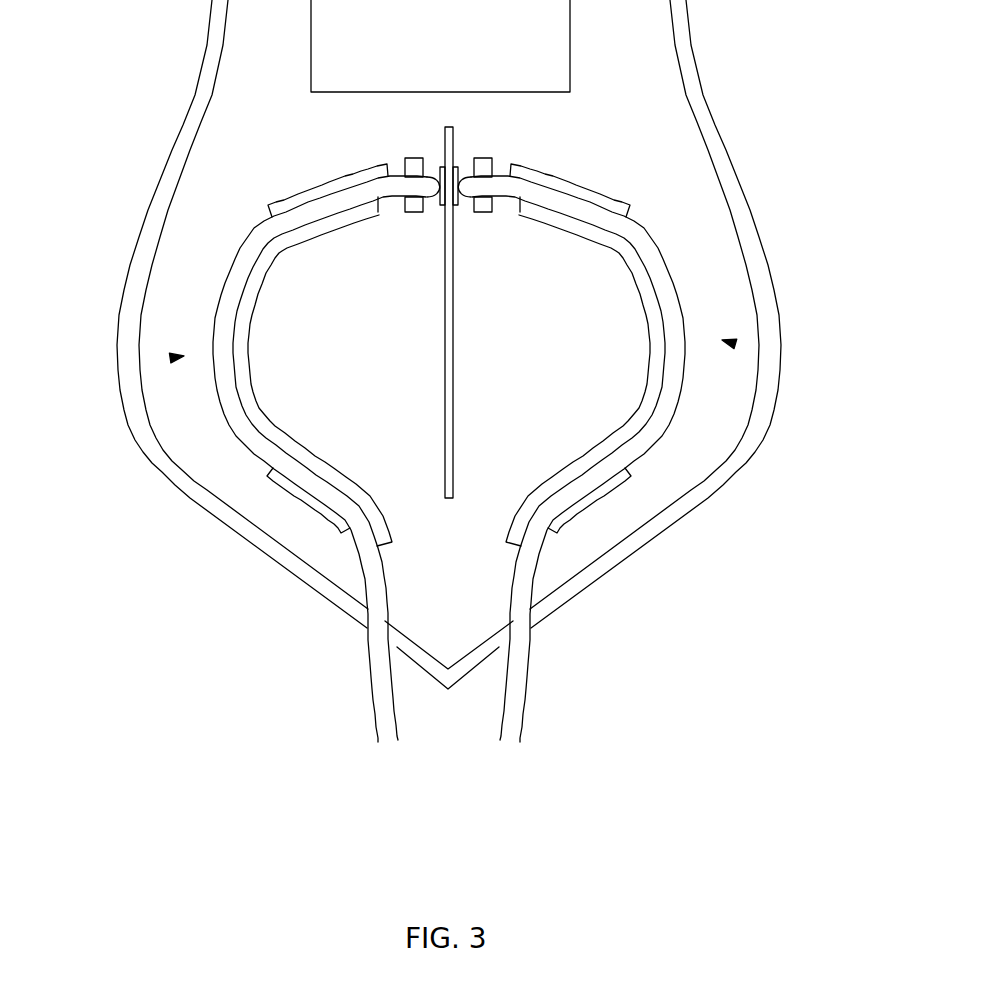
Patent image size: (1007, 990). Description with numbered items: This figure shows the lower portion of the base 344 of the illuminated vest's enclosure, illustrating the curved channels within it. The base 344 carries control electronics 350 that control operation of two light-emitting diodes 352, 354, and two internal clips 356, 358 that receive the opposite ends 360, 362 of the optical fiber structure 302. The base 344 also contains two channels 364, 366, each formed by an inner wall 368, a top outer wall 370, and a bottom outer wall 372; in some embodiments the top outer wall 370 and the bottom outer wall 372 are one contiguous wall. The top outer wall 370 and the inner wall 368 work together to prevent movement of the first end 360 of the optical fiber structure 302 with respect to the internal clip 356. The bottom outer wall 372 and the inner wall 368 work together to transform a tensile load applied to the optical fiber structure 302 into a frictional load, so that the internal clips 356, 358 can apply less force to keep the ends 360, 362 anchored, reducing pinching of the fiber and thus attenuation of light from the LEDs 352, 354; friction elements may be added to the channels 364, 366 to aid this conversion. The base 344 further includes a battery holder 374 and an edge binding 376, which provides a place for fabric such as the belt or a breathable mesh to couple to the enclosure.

The optical fiber structure 302 is at (500, 723).
The base 344 is at (718, 230).
The control electronics 350 is at (455, 318).
The light-emitting diode 352 is at (437, 178).
The light-emitting diode 354 is at (465, 178).
The internal clip 356 is at (417, 212).
The internal clip 358 is at (483, 212).
The first end 360 is at (415, 188).
The second end 362 is at (478, 188).
The channel 364 is at (175, 357).
The channel 366 is at (730, 342).
The inner wall 368 is at (651, 354).
The top outer wall 370 is at (613, 198).
The bottom outer wall 372 is at (610, 493).
The battery holder 374 is at (353, 24).
The edge binding 376 is at (160, 197).